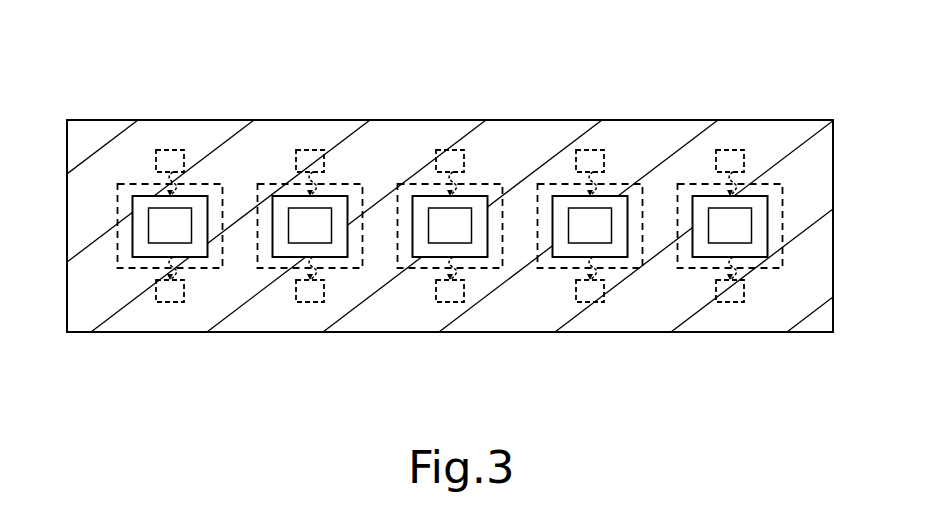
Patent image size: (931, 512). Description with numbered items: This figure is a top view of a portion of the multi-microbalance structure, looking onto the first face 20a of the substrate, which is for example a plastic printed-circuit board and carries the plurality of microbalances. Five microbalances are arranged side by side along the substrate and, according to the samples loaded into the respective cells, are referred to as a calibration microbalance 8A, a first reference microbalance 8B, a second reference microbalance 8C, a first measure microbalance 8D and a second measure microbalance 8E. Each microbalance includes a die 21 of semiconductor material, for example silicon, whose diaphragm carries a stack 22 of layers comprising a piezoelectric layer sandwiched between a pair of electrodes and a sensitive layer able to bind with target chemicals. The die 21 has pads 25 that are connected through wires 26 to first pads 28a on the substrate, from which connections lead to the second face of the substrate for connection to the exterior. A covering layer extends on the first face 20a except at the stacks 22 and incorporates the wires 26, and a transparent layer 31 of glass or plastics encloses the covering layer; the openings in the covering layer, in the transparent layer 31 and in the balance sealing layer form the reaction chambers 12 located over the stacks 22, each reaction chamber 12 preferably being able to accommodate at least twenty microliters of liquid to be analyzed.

The reaction chamber 12 is at (133, 241).
The first face 20a is at (123, 128).
The transparent layer 31 is at (536, 294).
The die 21 is at (113, 212).
The calibration microbalance 8A is at (178, 128).
The first reference microbalance 8B is at (333, 128).
The second reference microbalance 8C is at (449, 128).
The first measure microbalance 8D is at (617, 143).
The second measure microbalance 8E is at (755, 158).
The stack 22 is at (158, 237).
The first pad 28a is at (453, 224).
The wire 26 is at (437, 230).
The pad 25 is at (472, 230).